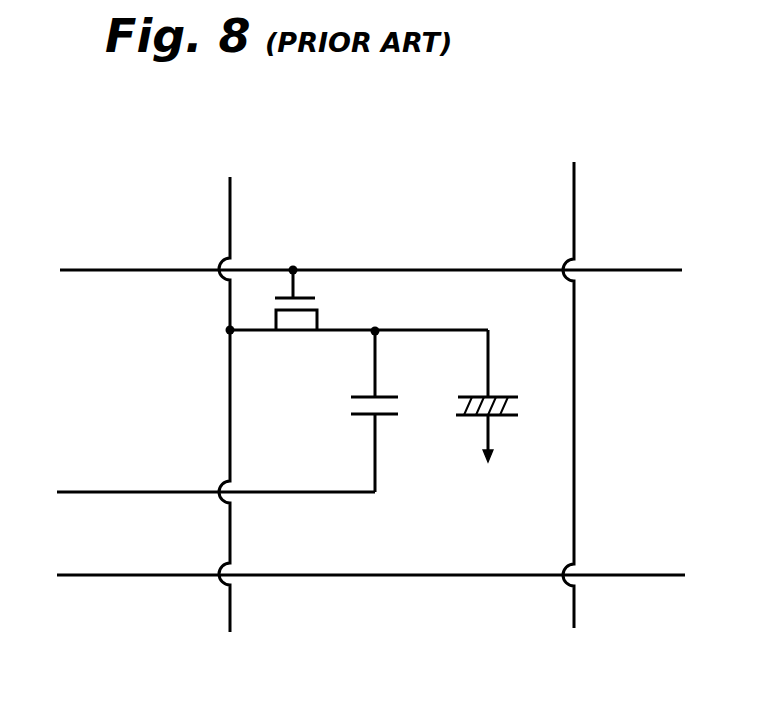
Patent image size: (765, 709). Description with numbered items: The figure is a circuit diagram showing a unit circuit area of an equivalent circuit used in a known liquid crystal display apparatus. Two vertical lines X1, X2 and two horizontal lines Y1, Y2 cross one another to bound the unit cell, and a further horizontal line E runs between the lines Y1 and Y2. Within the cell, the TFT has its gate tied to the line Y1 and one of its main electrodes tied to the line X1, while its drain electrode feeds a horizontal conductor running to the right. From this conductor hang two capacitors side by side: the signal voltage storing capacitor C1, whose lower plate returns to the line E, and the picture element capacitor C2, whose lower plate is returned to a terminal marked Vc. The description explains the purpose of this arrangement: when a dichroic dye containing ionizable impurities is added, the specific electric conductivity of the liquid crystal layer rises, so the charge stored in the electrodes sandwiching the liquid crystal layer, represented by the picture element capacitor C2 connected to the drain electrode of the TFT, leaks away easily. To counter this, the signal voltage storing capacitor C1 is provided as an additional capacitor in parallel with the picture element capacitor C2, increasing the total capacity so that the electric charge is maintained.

The first column (data) line X1 is at (222, 375).
The second column (data) line X2 is at (560, 373).
The first row (scan) line Y1 is at (349, 269).
The second row (scan) line Y2 is at (351, 567).
The common electrode line E is at (202, 479).
The element TFT is at (357, 316).
The signal voltage storing capacitor C1 is at (383, 411).
The picture element capacitor C2 is at (496, 396).
The common voltage Vc is at (509, 460).